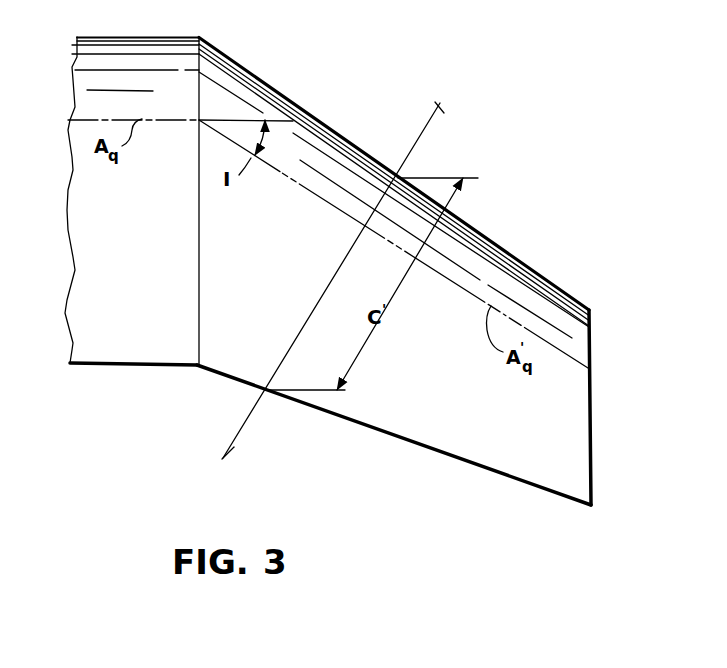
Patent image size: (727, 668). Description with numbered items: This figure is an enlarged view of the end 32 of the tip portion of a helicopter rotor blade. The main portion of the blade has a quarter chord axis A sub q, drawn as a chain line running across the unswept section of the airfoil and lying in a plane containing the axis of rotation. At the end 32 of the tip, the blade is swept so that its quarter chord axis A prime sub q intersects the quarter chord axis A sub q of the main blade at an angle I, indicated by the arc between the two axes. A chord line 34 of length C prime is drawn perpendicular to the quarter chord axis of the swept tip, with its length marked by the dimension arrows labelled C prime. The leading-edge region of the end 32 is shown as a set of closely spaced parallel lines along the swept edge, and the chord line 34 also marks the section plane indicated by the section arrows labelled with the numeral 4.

The end of the tip portion 32 is at (521, 260).
The chord line 34 is at (327, 287).
The section line 4- 4 is at (229, 451).